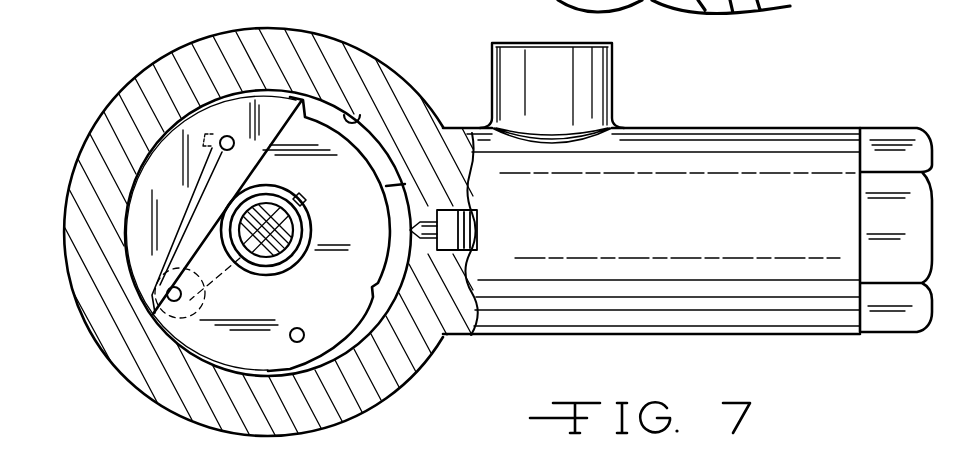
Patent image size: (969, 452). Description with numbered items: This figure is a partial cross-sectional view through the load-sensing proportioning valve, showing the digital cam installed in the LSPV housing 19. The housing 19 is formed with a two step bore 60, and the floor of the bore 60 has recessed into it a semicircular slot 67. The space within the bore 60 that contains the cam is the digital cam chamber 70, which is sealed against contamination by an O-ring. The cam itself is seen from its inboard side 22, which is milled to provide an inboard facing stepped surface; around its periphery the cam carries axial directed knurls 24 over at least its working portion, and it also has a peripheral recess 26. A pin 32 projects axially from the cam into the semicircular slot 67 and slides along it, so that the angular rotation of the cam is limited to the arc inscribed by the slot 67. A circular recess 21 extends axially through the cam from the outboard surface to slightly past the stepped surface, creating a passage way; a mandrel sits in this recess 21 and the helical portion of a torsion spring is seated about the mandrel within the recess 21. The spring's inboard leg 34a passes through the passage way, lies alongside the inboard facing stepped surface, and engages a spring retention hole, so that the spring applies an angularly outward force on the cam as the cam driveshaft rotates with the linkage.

The LSPV housing 19 is at (377, 58).
The two step bore 60 is at (358, 122).
The axial directed knurls 24 is at (300, 110).
The inboard side 22 is at (213, 337).
The circular recess 21 is at (267, 110).
The inboard leg 34a is at (200, 182).
The pin 32 is at (295, 328).
The peripheral recess 26 is at (475, 190).
The digital cam chamber 70 is at (388, 279).
The semicircular slot 67 is at (730, 24).